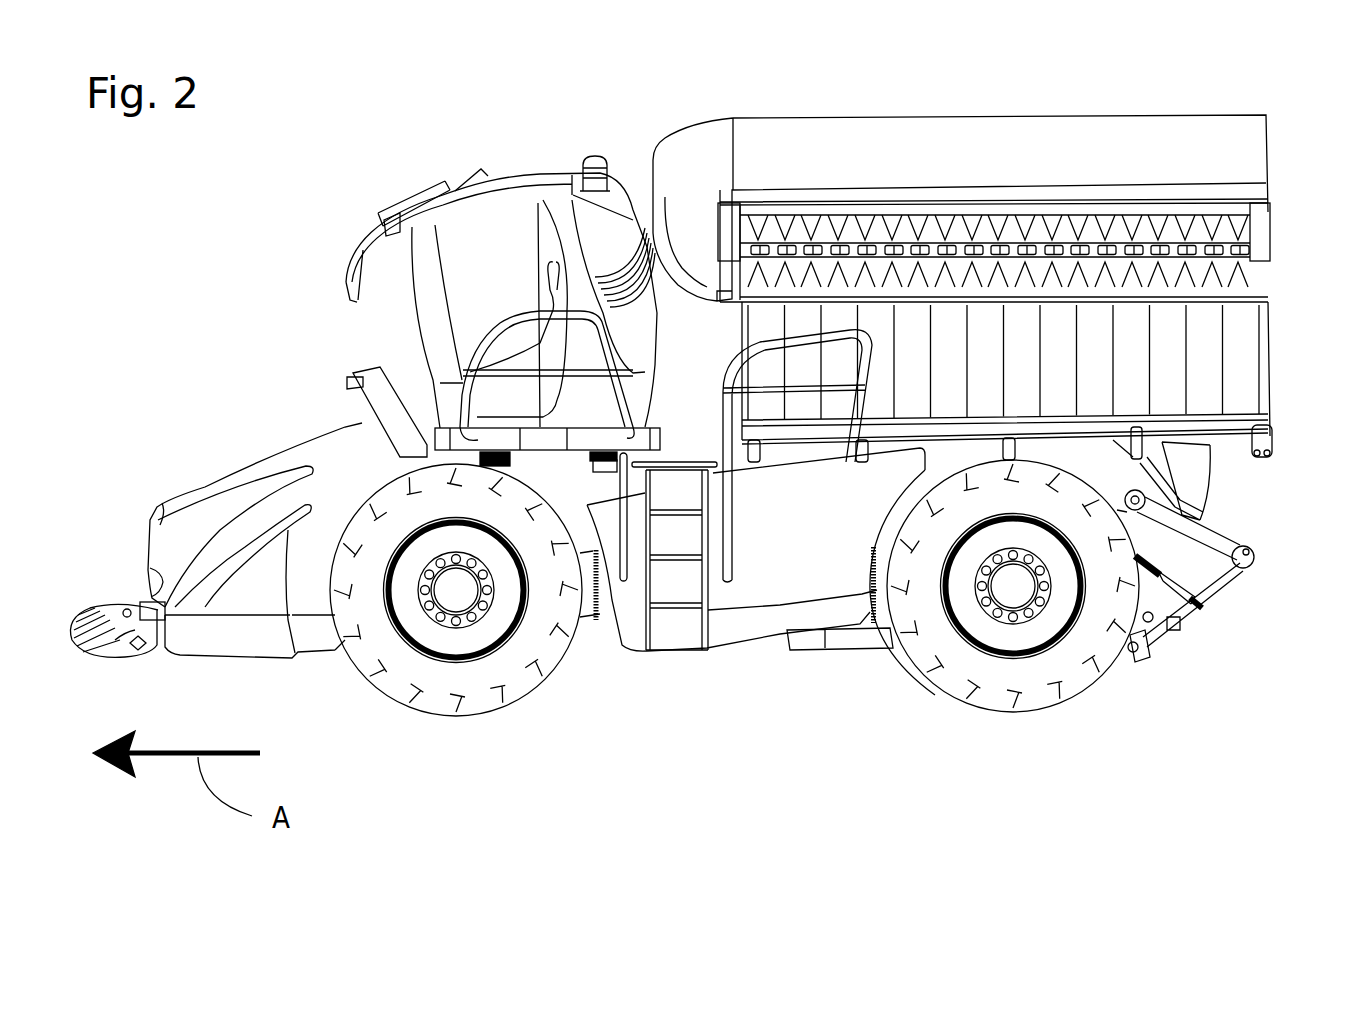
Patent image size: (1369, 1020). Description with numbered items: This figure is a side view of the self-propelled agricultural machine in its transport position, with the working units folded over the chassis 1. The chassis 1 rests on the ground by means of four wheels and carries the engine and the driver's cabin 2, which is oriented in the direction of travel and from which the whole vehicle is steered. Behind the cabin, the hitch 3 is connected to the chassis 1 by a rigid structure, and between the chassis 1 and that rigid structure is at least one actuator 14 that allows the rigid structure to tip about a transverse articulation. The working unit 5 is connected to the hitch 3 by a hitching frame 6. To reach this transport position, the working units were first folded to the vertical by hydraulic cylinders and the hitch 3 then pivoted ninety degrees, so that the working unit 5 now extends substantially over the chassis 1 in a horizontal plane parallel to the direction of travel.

The chassis 1 is at (607, 613).
The driver's cabin 2 is at (482, 250).
The hitch 3 is at (1233, 639).
The working unit 5 is at (843, 137).
The hitching frame 6 is at (1213, 540).
The actuator 14 is at (845, 683).